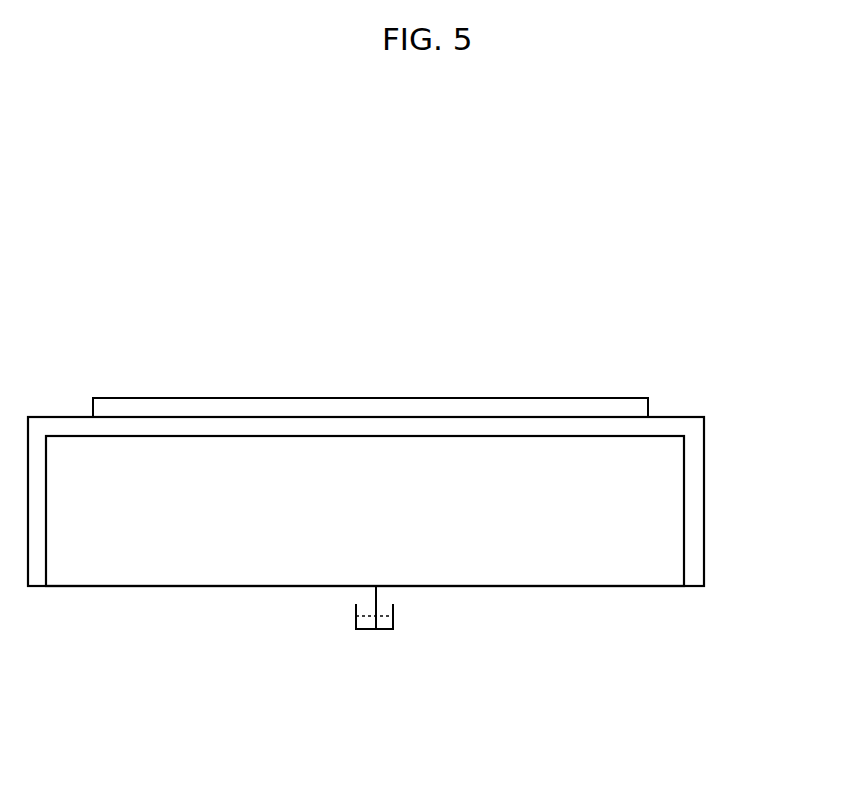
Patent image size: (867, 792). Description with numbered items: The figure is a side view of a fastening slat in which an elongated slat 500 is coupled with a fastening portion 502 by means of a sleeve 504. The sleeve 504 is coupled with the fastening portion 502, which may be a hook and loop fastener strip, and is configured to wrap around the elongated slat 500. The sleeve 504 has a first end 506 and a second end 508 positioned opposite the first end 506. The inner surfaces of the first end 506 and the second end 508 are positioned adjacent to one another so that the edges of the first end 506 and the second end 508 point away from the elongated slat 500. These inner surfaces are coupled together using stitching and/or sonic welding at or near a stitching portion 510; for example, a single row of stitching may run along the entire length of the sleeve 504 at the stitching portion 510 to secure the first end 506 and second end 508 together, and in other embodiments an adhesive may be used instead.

The elongated slat 500 is at (657, 530).
The fastening portion 502 is at (617, 408).
The sleeve 504 is at (82, 417).
The first end 506 is at (367, 630).
The second end 508 is at (390, 630).
The stitching portion 510 is at (403, 618).